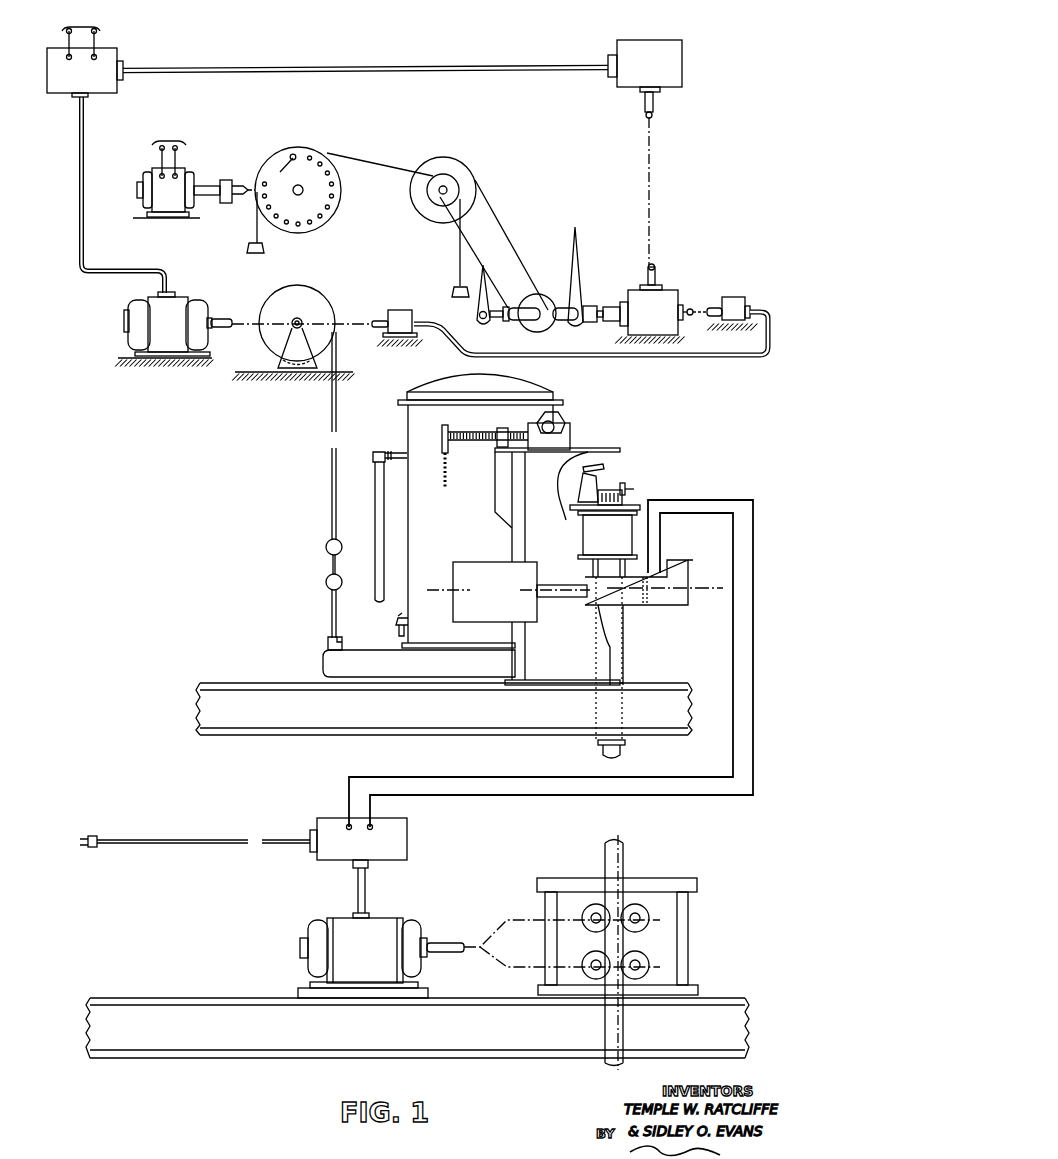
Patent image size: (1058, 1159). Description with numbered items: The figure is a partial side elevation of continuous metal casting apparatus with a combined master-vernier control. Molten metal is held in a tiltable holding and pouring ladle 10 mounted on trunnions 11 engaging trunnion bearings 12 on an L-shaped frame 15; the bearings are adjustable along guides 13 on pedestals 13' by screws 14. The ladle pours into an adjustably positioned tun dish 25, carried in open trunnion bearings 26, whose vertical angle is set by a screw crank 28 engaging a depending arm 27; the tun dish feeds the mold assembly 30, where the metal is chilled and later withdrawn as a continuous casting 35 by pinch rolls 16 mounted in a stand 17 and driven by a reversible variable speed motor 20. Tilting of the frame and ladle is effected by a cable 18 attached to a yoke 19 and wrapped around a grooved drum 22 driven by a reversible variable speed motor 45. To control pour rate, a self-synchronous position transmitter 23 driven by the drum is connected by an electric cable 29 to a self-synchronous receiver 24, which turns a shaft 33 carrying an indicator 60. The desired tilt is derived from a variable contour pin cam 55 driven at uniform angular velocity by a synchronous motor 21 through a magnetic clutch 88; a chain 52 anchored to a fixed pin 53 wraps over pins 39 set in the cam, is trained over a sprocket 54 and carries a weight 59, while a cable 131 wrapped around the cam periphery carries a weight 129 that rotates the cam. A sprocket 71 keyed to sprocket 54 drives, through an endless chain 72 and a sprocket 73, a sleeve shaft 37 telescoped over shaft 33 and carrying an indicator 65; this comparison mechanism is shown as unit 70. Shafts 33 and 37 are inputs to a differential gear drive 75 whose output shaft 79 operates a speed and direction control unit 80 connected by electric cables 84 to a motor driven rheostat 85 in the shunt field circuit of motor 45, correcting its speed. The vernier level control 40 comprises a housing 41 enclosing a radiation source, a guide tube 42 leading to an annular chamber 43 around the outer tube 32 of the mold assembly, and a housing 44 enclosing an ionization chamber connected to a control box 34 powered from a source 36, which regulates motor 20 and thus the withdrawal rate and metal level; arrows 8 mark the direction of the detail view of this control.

The section line 8 is at (433, 580).
The holding and pouring ladle 10 is at (408, 423).
The trunnions 11 is at (557, 423).
The trunnion bearings 12 is at (573, 434).
The guides 13 is at (571, 476).
The pedestals 13' is at (562, 568).
The screws 14 is at (480, 442).
The L-shaped frame 15 is at (443, 663).
The pinch rolls 16 is at (645, 925).
The stand 17 is at (690, 922).
The cable 18 is at (332, 498).
The yoke 19 is at (332, 612).
The reversible variable speed motor 20 is at (342, 935).
The synchronous motor 21 is at (170, 203).
The grooved drum 22 is at (312, 300).
The self-synchronous position transmitter 23 is at (400, 310).
The self-synchronous receiver 24 is at (736, 297).
The tun dish 25 is at (575, 480).
The open trunnion bearings 26 is at (596, 479).
The depending arm 27 is at (588, 493).
The screw crank 28 is at (634, 487).
The electric cable 29 is at (612, 362).
The mold assembly 30 is at (595, 532).
The outer tube 32 is at (625, 657).
The shaft 33 is at (692, 318).
The control box 34 is at (407, 838).
The continuous casting 35 is at (625, 752).
The source 36 is at (100, 835).
The sleeve shaft 37 is at (566, 322).
The pins 39 is at (318, 178).
The radiation beam control 40 is at (664, 659).
The housing 41 is at (484, 562).
The guide tube 42 is at (560, 606).
The annular chamber 43 is at (612, 612).
The housing 44 is at (672, 607).
The reversible variable speed motor 45 is at (165, 340).
The chain 52 is at (357, 160).
The anchor pin 53 is at (280, 172).
The sprocket 54 is at (437, 202).
The variable contour pin cam 55 is at (318, 214).
The weight 59 is at (455, 287).
The indicator 60 is at (477, 305).
The indicator 65 is at (580, 281).
The unit 70 is at (523, 205).
The sprocket 71 is at (453, 167).
The endless chain 72 is at (508, 230).
The sprocket 73 is at (532, 298).
The differential gear drive 75 is at (667, 298).
The differential output shaft 79 is at (658, 274).
The speed and direction control unit 80 is at (672, 70).
The electric cables 84 is at (337, 68).
The motor driven rheostat 85 is at (107, 87).
The magnetic clutch 88 is at (227, 178).
The weight 129 is at (264, 247).
The cable 131 is at (255, 231).